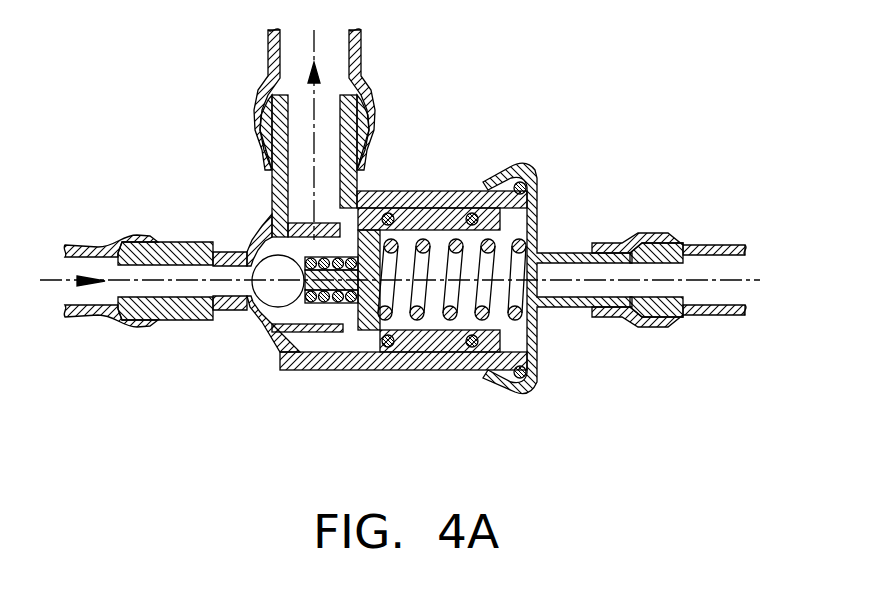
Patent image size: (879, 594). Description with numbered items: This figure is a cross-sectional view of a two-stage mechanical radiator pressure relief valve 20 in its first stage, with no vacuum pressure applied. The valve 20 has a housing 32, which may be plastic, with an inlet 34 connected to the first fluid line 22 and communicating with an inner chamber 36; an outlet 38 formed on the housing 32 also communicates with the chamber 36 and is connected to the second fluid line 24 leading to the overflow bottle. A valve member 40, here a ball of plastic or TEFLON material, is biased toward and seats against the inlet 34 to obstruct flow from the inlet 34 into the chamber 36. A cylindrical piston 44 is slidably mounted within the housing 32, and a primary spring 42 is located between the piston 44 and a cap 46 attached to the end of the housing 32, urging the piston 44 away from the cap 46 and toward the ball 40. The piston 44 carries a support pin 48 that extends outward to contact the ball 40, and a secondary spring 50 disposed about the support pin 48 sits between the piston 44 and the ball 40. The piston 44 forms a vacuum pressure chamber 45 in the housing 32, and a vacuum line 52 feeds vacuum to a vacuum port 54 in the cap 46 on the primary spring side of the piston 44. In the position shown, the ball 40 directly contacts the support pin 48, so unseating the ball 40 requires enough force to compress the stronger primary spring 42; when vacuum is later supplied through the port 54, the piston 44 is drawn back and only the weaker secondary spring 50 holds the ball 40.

The pressure relief valve 20 is at (510, 68).
The first fluid line 22 is at (83, 318).
The second fluid line 24 is at (360, 38).
The housing 32 is at (293, 368).
The inlet 34 is at (180, 250).
The inner chamber 36 is at (360, 371).
The outlet 38 is at (360, 98).
The valve member 40 is at (246, 311).
The primary spring 42 is at (532, 214).
The cylindrical piston 44 is at (343, 334).
The vacuum pressure chamber 45 is at (443, 314).
The cap 46 is at (538, 362).
The support pin 48 is at (357, 194).
The secondary spring 50 is at (272, 222).
The vacuum line 52 is at (706, 246).
The vacuum port 54 is at (592, 310).